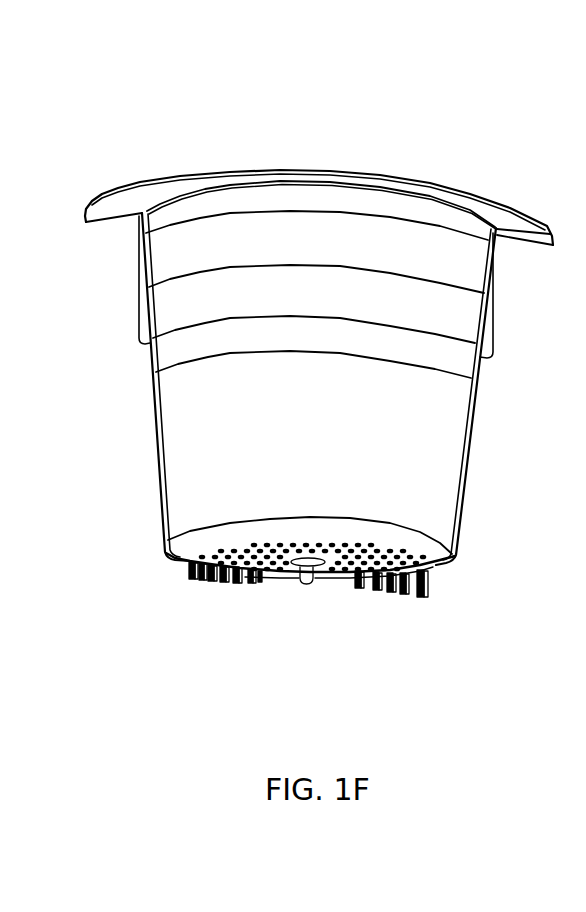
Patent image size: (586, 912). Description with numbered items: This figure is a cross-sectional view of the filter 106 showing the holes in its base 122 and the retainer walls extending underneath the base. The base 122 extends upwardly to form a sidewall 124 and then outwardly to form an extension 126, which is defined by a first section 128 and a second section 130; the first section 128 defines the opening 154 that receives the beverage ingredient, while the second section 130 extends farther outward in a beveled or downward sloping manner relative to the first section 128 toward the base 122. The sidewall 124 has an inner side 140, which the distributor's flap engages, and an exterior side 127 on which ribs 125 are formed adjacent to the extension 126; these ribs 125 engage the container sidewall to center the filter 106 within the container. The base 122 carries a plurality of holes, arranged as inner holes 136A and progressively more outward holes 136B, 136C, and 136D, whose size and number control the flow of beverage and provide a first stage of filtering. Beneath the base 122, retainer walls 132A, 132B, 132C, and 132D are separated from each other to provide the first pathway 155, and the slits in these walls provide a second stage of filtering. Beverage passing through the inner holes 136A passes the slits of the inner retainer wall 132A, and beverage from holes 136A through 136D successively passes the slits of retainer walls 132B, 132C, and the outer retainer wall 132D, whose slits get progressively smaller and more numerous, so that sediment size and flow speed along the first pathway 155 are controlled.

The filter 106 is at (355, 86).
The extension 126 is at (112, 184).
The opening 154 is at (234, 203).
The first section 128 is at (507, 218).
The second section 130 is at (547, 213).
The inner side of the sidewall 140 is at (147, 302).
The ribs 125 is at (140, 339).
The sidewall 124 is at (152, 388).
The exterior side of the sidewall 127 is at (160, 441).
The base 122 is at (455, 555).
The inner holes 136A is at (207, 550).
The holes 136B is at (390, 550).
The holes 136C is at (363, 548).
The holes 136D is at (200, 555).
The inner retainer wall 132A is at (253, 583).
The retainer wall 132B is at (227, 583).
The retainer wall 132C is at (210, 580).
The outer retainer wall 132D is at (187, 580).
The first pathway 155 is at (367, 583).